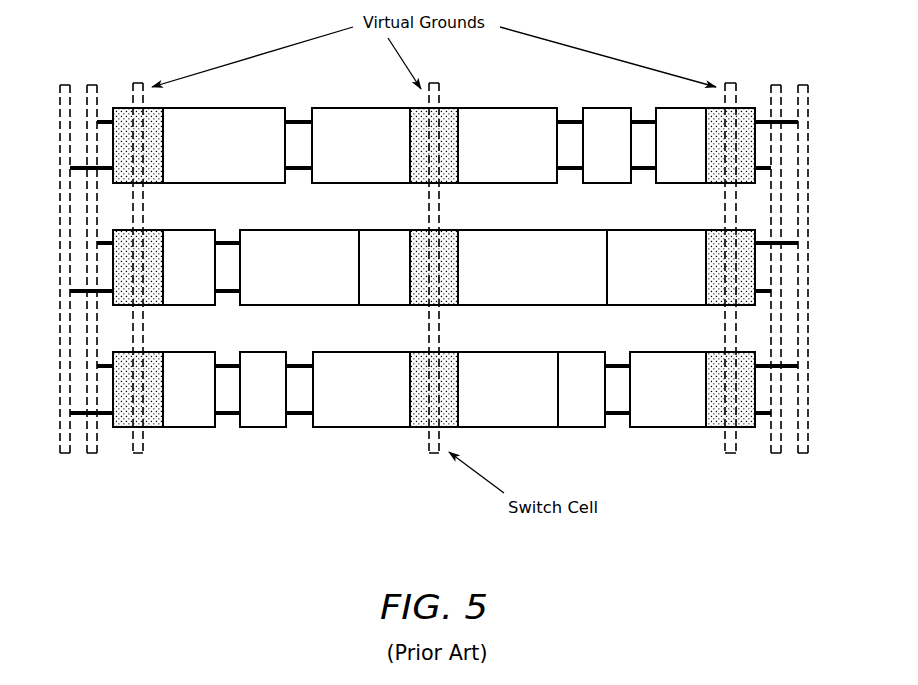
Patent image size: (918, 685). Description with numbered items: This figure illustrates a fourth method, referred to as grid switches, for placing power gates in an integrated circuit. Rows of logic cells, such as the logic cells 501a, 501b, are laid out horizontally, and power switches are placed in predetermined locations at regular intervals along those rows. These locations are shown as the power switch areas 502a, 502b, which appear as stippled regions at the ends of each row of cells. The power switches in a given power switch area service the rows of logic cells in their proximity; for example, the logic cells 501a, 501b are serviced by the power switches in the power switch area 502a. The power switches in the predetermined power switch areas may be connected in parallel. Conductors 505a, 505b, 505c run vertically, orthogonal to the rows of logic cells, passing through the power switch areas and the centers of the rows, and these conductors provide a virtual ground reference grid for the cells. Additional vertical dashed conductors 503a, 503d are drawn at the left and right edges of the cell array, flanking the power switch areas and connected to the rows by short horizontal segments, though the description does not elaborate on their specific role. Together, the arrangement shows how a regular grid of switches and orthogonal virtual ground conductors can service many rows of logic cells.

The logic cell 501a is at (190, 428).
The logic cell 501b is at (263, 428).
The power switch area 502a is at (123, 428).
The power switch area 502b is at (745, 428).
The bit line 503a is at (808, 95).
The bit line 503d is at (84, 96).
The conductor 505a is at (730, 83).
The conductor 505b is at (443, 97).
The conductor 505c is at (139, 83).